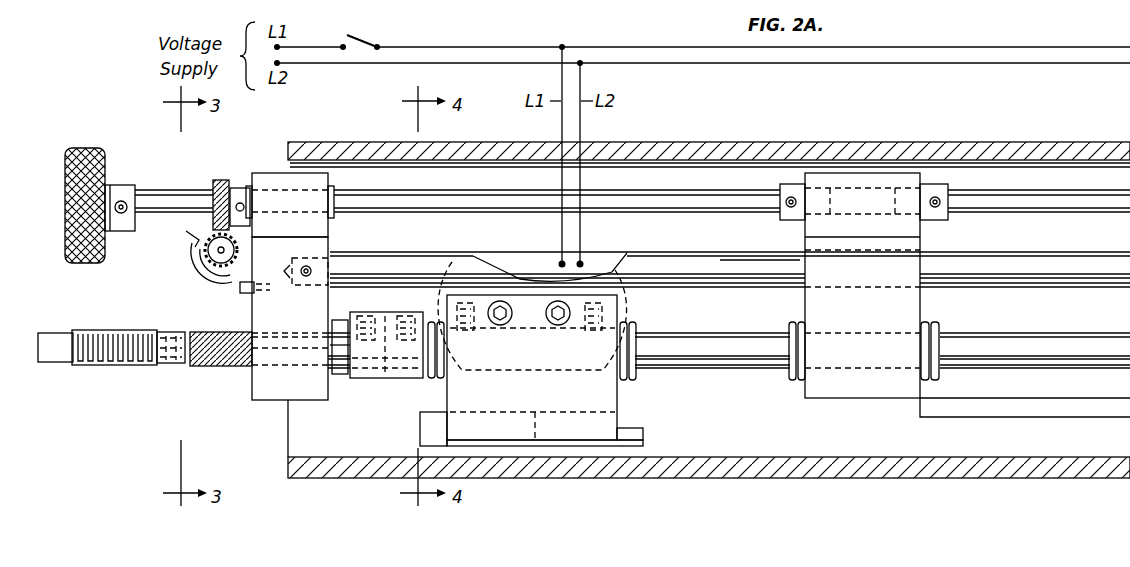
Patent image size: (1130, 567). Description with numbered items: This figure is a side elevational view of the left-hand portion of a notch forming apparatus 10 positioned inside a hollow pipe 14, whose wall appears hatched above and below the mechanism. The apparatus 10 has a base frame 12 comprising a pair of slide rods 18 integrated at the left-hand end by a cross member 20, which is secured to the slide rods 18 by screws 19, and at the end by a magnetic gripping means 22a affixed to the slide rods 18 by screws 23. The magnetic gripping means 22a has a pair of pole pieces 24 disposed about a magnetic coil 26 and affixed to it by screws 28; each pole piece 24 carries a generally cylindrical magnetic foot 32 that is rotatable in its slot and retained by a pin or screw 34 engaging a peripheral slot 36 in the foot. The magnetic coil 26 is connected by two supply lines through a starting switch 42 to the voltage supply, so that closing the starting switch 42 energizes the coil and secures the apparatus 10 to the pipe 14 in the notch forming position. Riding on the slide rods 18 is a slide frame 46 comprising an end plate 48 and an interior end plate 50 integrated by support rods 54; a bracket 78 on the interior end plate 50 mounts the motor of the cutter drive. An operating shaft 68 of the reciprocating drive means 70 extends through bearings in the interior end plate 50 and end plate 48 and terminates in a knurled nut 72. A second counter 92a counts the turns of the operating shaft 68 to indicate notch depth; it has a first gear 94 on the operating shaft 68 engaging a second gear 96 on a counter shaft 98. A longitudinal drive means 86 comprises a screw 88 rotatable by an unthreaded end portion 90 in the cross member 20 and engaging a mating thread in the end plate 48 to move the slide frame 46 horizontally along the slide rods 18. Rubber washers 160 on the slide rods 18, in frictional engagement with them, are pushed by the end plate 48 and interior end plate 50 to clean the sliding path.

The notch forming apparatus 10 is at (1038, 126).
The base frame 12 is at (726, 380).
The hollow pipe 14 is at (787, 478).
The slide rods 18 is at (223, 370).
The screws 19 is at (410, 314).
The cross member 20 is at (385, 380).
The magnetic gripping means 22a is at (618, 395).
The screws 23 is at (454, 264).
The pole pieces 24 is at (541, 404).
The magnetic coil 26 is at (532, 252).
The screws 28 is at (556, 330).
The magnetic foot 32 is at (420, 432).
The pin or screw 34 is at (496, 431).
The peripheral slot 36 is at (540, 430).
The starting switch 42 is at (365, 36).
The slide frame 46 is at (267, 408).
The end plate 48 is at (268, 172).
The interior end plate 50 is at (921, 308).
The support rods 54 is at (1110, 288).
The operating shaft 68 is at (184, 194).
The reciprocating drive means 70 is at (78, 189).
The knurled nut 72 is at (64, 183).
The bracket 78 is at (1010, 407).
The longitudinal drive means 86 is at (97, 375).
The screw 88 is at (143, 367).
The unthreaded end portion 90 is at (400, 375).
The second counter 92a is at (205, 255).
The first gear 94 is at (218, 180).
The second gear 96 is at (200, 238).
The counter shaft 98 is at (204, 271).
The rubber washers 160 is at (432, 380).